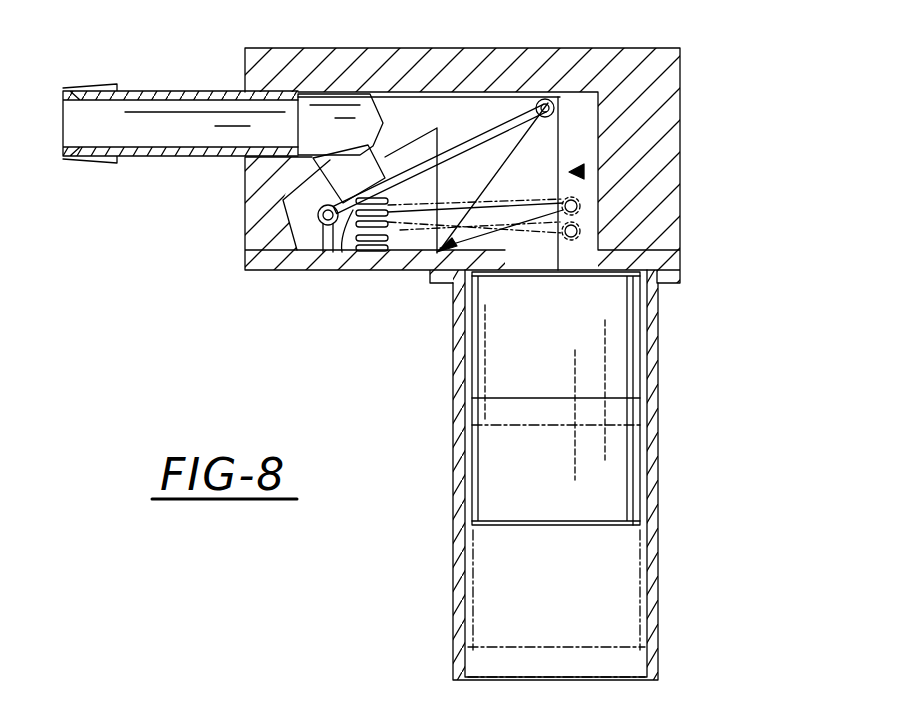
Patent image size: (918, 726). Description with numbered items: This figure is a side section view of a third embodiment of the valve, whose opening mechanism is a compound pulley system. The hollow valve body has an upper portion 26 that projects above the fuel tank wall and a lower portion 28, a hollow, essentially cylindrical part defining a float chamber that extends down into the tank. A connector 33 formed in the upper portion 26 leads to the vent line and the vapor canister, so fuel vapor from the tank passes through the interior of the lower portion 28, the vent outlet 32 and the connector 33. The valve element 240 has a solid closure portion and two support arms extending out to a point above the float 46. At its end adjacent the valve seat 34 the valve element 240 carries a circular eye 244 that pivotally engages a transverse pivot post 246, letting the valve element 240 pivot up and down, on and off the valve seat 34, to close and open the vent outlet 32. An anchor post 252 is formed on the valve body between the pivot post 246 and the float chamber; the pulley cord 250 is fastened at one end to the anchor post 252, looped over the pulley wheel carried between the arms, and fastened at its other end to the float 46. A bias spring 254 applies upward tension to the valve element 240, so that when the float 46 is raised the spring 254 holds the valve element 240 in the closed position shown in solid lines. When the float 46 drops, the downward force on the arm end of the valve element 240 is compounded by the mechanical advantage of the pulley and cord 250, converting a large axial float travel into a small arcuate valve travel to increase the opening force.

The upper portion 26 is at (662, 78).
The lower portion 28 is at (655, 472).
The vent outlet 32 is at (353, 173).
The connector 33 is at (150, 88).
The valve seat 34 is at (330, 176).
The float 46 is at (620, 373).
The valve element 240 is at (475, 143).
The circular eye 244 is at (556, 100).
The pivot post 246 is at (538, 96).
The pulley cord 250 is at (580, 171).
The anchor post 252 is at (412, 270).
The bias spring 254 is at (336, 254).